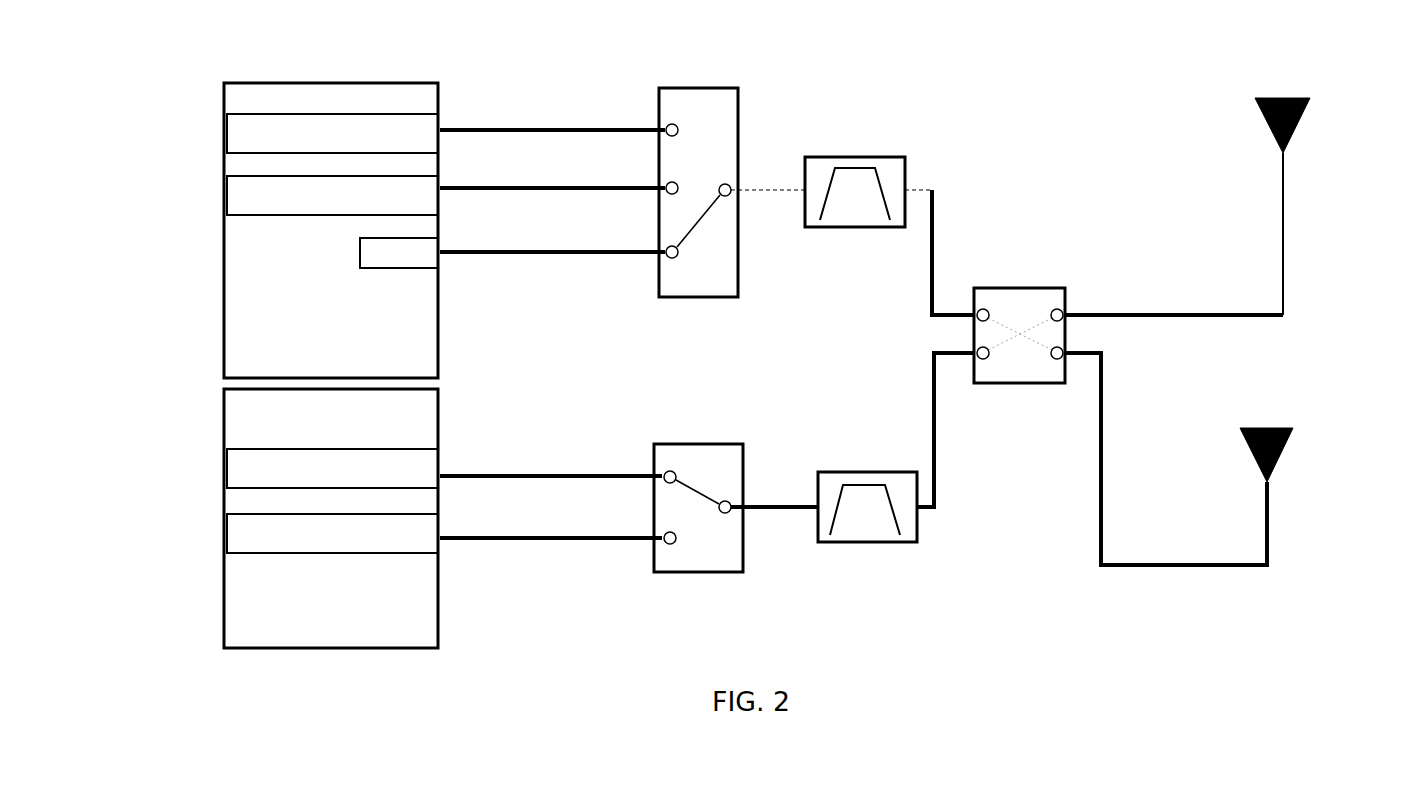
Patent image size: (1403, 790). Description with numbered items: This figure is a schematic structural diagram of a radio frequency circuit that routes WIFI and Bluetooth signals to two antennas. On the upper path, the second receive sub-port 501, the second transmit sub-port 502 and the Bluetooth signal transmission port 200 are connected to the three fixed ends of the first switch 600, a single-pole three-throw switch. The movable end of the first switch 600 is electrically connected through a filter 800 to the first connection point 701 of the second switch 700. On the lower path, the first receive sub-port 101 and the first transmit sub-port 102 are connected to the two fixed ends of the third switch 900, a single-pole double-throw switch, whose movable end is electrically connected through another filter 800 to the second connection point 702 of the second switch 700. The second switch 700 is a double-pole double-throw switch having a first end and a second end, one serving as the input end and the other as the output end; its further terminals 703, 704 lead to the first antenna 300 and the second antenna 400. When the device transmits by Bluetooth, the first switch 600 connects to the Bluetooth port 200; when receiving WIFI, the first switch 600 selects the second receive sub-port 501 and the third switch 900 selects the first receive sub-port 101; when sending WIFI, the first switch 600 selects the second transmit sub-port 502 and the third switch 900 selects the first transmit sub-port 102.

The first receive sub-port 101 is at (222, 528).
The first transmit sub-port 102 is at (222, 460).
The Bluetooth signal transmission port 200 is at (442, 272).
The first antenna 300 is at (1273, 98).
The second antenna 400 is at (1240, 443).
The second receive sub-port 501 is at (222, 190).
The second transmit sub-port 502 is at (222, 130).
The first switch 600 is at (690, 100).
The second switch 700 is at (1034, 335).
The first connection point 701 is at (975, 285).
The second connection point 702 is at (985, 360).
The third port of cross switch 703 is at (1055, 300).
The fourth port of cross switch 704 is at (1060, 360).
The filter 800 is at (826, 165).
The third switch 900 is at (688, 456).